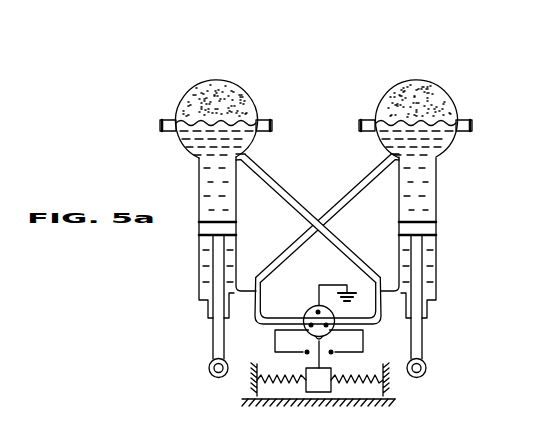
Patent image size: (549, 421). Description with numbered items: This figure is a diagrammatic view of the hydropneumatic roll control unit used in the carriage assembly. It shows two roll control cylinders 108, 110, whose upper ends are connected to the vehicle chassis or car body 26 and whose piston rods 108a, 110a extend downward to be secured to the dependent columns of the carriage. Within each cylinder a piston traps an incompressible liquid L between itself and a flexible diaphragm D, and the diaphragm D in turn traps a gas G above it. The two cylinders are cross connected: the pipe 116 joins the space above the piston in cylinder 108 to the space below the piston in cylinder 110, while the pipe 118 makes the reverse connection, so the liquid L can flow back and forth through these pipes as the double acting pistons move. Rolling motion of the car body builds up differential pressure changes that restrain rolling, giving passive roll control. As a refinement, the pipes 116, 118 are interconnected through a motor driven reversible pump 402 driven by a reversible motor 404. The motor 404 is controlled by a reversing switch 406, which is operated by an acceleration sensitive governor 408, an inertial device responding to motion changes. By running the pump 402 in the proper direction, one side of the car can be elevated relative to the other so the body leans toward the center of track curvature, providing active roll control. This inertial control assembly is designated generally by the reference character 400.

The cylinder 108 is at (199, 219).
The cylinder 110 is at (436, 202).
The piston rod 108a is at (213, 347).
The piston rod 110a is at (424, 344).
The pipe 116 is at (272, 174).
The pipe 118 is at (337, 215).
The inertial control assembly 400 is at (266, 347).
The motor driven reversible pump 402 is at (311, 307).
The reversible motor 404 is at (306, 312).
The reversing switch 406 is at (337, 341).
The acceleration sensitive governor 408 is at (320, 378).
The vehicle chassis 26 is at (398, 401).
The gas G is at (226, 97).
The flexible diaphragm D is at (237, 124).
The liquid L is at (200, 173).